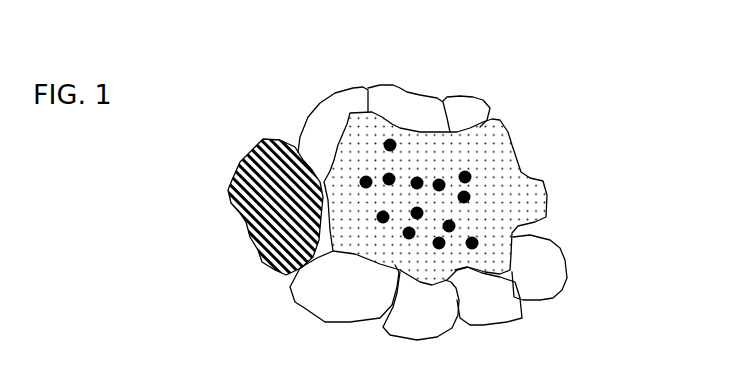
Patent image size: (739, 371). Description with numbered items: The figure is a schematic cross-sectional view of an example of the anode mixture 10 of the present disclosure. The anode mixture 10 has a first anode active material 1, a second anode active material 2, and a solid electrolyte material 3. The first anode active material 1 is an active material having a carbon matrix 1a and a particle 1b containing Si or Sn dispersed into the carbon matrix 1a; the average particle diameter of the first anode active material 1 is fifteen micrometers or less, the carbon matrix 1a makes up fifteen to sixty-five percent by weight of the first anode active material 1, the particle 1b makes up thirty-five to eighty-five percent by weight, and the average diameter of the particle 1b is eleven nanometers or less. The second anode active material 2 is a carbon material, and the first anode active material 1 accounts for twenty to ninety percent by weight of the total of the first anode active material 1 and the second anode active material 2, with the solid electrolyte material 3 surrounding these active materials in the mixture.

The anode mixture 10 is at (492, 68).
The first anode active material 1 is at (590, 110).
The carbon matrix 1a is at (505, 188).
The particle containing Si or Sn 1b is at (471, 175).
The second anode active material 2 is at (262, 139).
The solid electrolyte material 3 is at (545, 278).